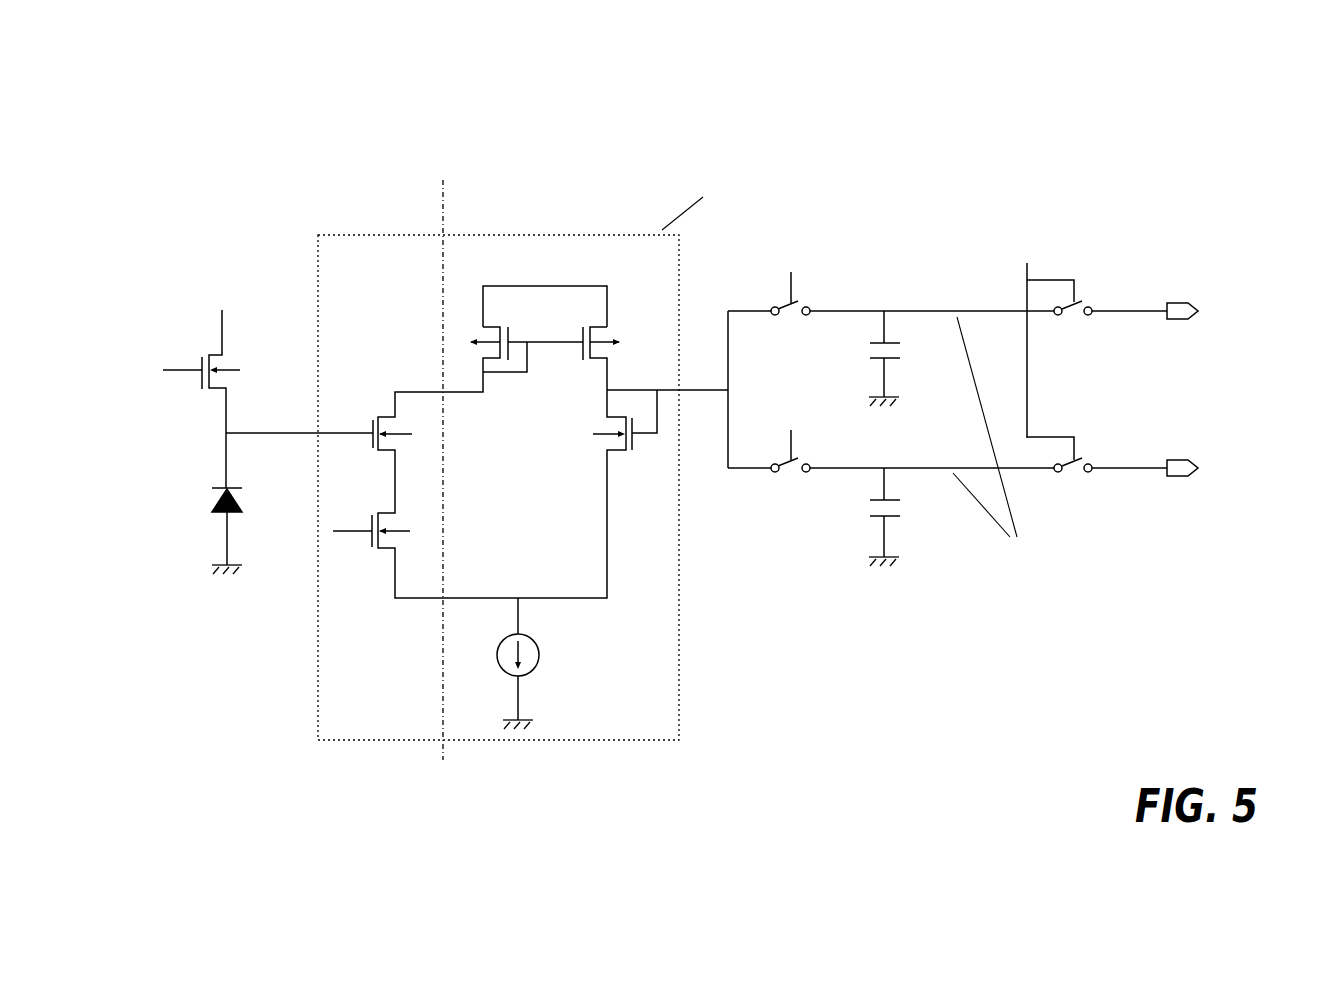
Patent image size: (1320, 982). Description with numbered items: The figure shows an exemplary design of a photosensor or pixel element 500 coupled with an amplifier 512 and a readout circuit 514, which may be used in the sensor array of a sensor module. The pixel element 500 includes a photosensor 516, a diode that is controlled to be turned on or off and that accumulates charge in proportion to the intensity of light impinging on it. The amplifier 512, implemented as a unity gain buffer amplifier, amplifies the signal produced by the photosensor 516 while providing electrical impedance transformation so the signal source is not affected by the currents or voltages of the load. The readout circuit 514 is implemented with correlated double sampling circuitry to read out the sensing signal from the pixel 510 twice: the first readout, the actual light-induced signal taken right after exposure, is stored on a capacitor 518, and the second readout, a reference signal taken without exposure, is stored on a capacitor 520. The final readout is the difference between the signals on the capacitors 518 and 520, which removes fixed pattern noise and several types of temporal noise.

The pixel element 500 is at (700, 402).
The pixel 510 is at (199, 371).
The amplifier 512 is at (687, 461).
The readout circuit 514 is at (1133, 355).
The photosensor 516 is at (258, 491).
The capacitor 518 is at (792, 431).
The capacitor 520 is at (993, 468).